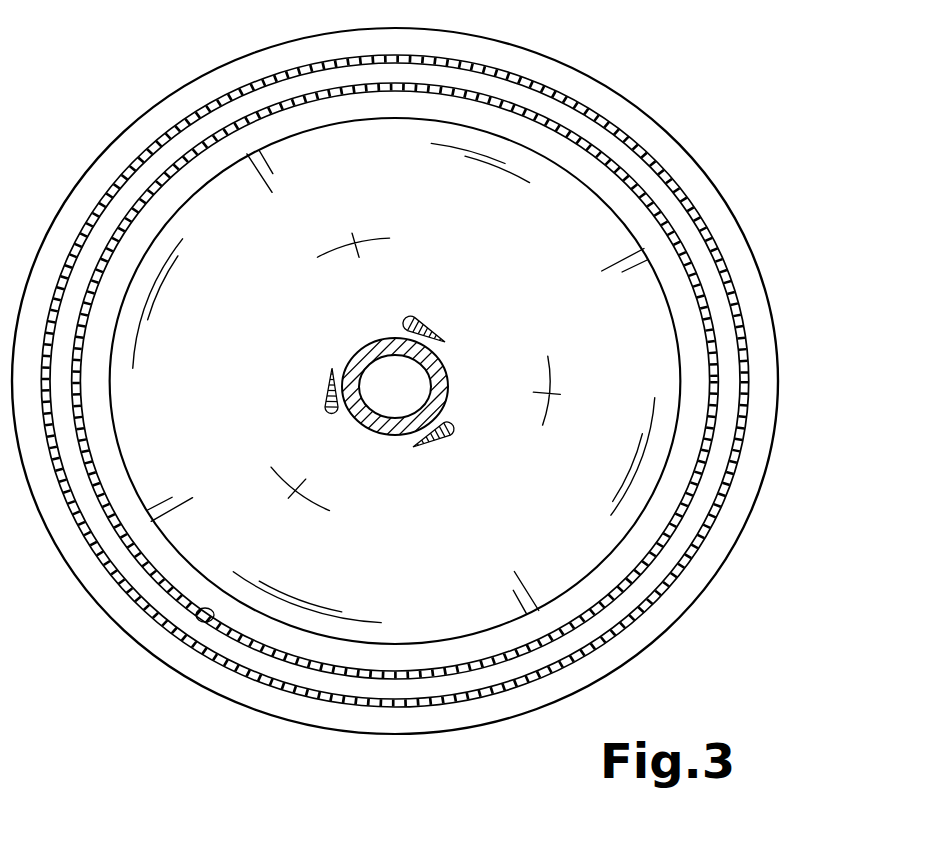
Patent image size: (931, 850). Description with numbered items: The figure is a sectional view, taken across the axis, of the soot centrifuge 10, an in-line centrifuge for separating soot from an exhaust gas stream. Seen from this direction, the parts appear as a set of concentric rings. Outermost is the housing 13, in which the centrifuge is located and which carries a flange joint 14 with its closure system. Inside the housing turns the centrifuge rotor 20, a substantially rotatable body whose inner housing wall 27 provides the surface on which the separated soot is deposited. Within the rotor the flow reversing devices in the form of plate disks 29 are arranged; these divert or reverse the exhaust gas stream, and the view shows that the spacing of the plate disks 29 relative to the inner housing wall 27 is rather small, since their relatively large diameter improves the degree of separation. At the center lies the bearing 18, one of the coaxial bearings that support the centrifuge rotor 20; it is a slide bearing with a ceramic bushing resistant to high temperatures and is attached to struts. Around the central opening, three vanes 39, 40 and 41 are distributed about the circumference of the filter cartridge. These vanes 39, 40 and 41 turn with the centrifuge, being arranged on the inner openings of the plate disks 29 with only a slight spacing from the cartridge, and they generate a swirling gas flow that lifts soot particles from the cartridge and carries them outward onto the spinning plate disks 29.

The soot centrifuge 10 is at (424, 367).
The housing 13 is at (127, 172).
The flange joint 14 is at (171, 78).
The bearing 18 is at (366, 440).
The centrifuge rotor 20 is at (372, 682).
The inner housing wall 27 is at (196, 612).
The plate disks 29 is at (619, 543).
The vane 39 is at (428, 327).
The vane 40 is at (325, 407).
The vane 41 is at (447, 442).